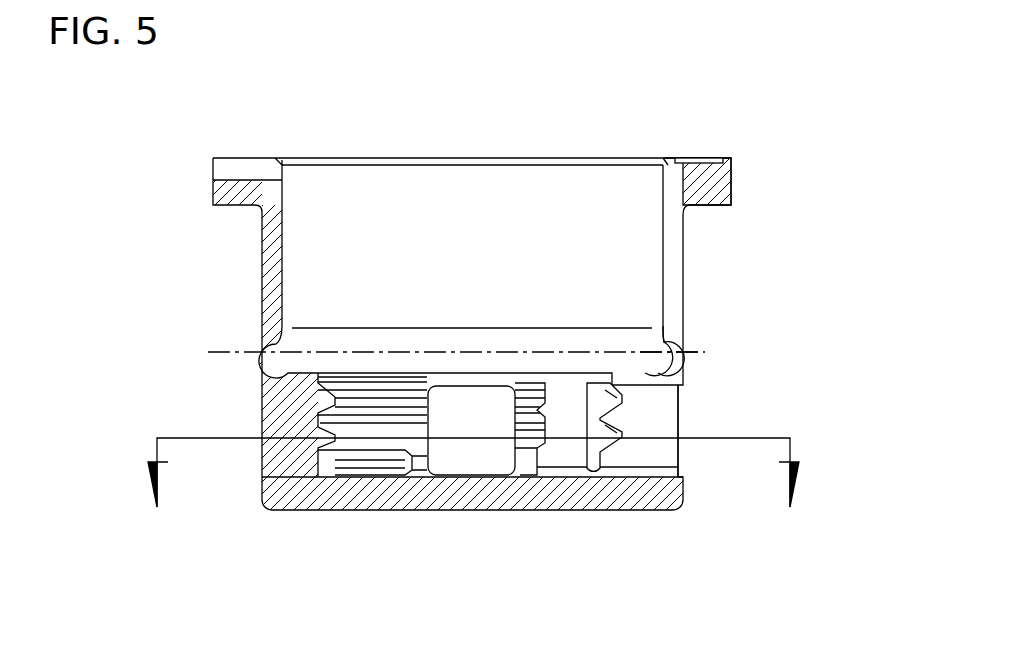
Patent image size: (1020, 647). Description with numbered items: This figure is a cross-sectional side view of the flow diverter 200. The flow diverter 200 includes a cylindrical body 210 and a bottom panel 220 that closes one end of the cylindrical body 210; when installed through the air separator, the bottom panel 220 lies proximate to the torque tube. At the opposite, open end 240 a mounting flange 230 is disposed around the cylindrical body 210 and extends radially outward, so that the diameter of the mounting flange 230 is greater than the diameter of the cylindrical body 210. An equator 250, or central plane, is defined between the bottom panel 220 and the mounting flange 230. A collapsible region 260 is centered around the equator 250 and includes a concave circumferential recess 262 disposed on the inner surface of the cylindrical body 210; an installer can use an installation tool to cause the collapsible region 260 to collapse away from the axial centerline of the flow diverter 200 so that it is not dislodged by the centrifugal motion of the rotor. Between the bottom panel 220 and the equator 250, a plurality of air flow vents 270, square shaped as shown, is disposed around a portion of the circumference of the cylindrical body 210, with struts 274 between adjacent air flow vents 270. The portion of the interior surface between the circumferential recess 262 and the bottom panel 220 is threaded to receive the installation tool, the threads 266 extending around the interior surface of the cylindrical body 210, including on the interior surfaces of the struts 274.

The flow diverter 200 is at (155, 151).
The cylindrical body 210 is at (248, 259).
The bottom panel 220 is at (612, 492).
The mounting flange 230 is at (703, 158).
The open end 240 is at (436, 198).
The equator 250 is at (218, 352).
The collapsible region 260 is at (700, 328).
The concave circumferential recess 262 is at (655, 342).
The threads 266 is at (318, 477).
The air flow vents 270 is at (450, 462).
The struts 274 is at (678, 422).